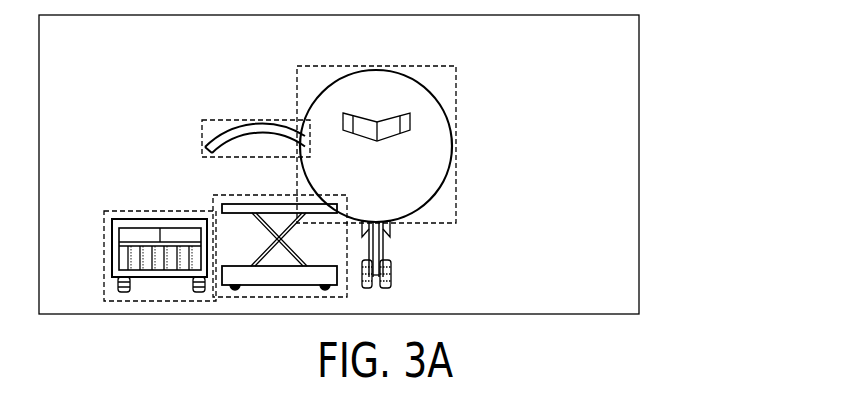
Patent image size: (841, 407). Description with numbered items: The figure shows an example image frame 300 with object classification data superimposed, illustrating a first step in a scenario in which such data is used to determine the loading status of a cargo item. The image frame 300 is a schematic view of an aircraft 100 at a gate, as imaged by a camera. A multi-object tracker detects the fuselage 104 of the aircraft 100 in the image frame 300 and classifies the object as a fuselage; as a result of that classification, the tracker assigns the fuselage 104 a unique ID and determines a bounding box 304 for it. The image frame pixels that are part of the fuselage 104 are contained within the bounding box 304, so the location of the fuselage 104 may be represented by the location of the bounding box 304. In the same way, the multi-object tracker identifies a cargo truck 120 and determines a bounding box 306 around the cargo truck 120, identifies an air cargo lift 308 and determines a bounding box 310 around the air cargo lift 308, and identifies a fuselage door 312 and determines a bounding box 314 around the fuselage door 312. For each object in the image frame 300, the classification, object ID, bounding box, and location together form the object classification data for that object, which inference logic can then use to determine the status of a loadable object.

The image frame 300 is at (643, 126).
The bounding box 304 is at (312, 66).
The fuselage 104 is at (443, 115).
The aircraft 100 is at (443, 245).
The bounding box 314 is at (214, 118).
The fuselage door 312 is at (262, 123).
The bounding box 306 is at (128, 211).
The cargo truck 120 is at (113, 258).
The bounding box 310 is at (216, 195).
The air cargo lift 308 is at (253, 281).